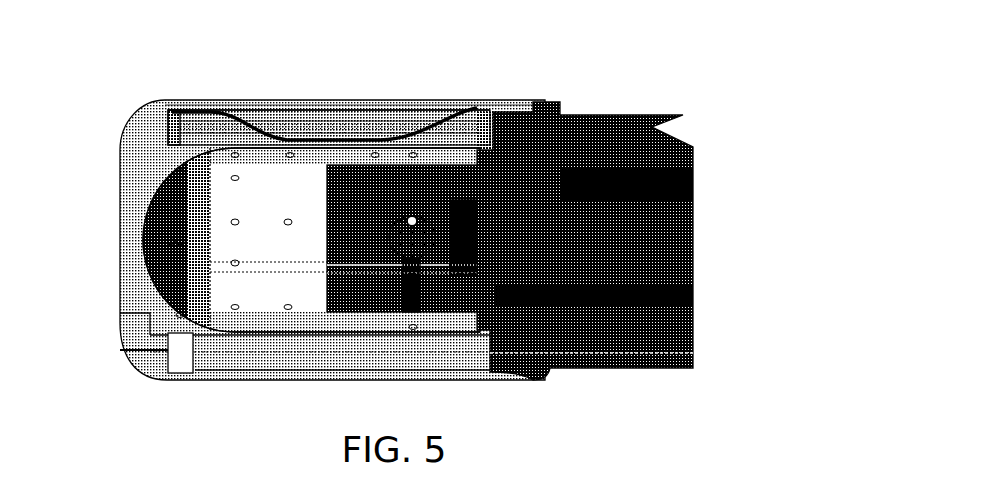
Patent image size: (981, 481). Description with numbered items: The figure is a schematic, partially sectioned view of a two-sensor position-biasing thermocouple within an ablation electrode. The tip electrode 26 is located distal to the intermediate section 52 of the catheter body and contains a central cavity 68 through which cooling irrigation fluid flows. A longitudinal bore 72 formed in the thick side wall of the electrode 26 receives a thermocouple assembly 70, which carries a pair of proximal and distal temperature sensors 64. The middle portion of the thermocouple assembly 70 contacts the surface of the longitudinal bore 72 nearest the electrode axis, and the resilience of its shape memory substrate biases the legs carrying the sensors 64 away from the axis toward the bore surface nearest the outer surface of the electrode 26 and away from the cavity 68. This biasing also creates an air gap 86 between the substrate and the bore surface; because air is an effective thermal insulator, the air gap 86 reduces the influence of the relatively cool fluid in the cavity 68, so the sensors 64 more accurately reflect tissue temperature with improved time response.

The tip electrode 26 is at (122, 208).
The intermediate section 52 is at (573, 117).
The temperature sensors 64 is at (193, 112).
The central cavity 68 is at (266, 205).
The thermocouple assembly 70 is at (257, 123).
The longitudinal bore 72 is at (380, 107).
The air gap 86 is at (197, 130).